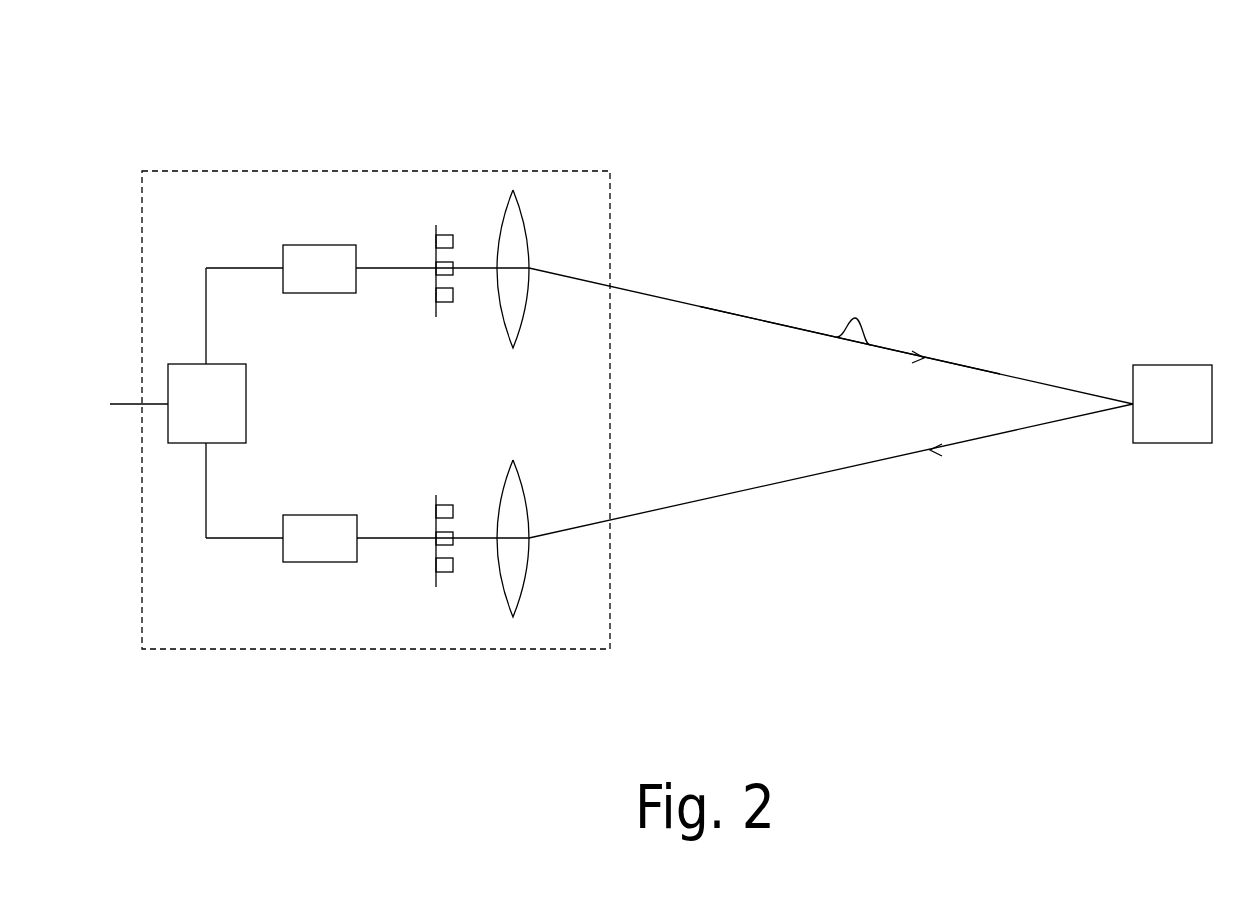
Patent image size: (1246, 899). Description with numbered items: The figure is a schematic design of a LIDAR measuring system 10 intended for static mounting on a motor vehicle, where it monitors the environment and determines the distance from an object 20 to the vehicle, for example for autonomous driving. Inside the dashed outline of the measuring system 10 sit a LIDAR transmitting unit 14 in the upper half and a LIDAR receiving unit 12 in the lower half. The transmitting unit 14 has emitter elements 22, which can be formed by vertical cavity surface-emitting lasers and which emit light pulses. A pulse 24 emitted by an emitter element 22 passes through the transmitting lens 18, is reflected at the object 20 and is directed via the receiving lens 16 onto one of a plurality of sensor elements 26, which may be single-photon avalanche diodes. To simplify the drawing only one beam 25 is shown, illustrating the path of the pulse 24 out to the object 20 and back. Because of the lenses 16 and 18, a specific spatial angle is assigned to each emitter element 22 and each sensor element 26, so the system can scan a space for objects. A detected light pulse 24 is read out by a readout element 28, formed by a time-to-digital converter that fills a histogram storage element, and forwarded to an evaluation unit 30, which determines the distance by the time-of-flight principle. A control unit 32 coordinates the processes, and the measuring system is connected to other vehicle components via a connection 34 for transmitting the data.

The LIDAR measuring system 10 is at (635, 242).
The LIDAR receiving unit 12 is at (440, 633).
The LIDAR transmitting unit 14 is at (477, 166).
The receiving lens 16 is at (528, 577).
The transmitting lens 18 is at (523, 223).
The object 20 is at (1168, 365).
The emitter elements 22 is at (453, 298).
The pulse 24 is at (867, 328).
The beam 25 is at (1035, 380).
The sensor elements 26 is at (453, 510).
The readout element 28 is at (327, 562).
The evaluation unit 30 is at (168, 430).
The control unit 32 is at (304, 245).
The connection 34 is at (128, 402).